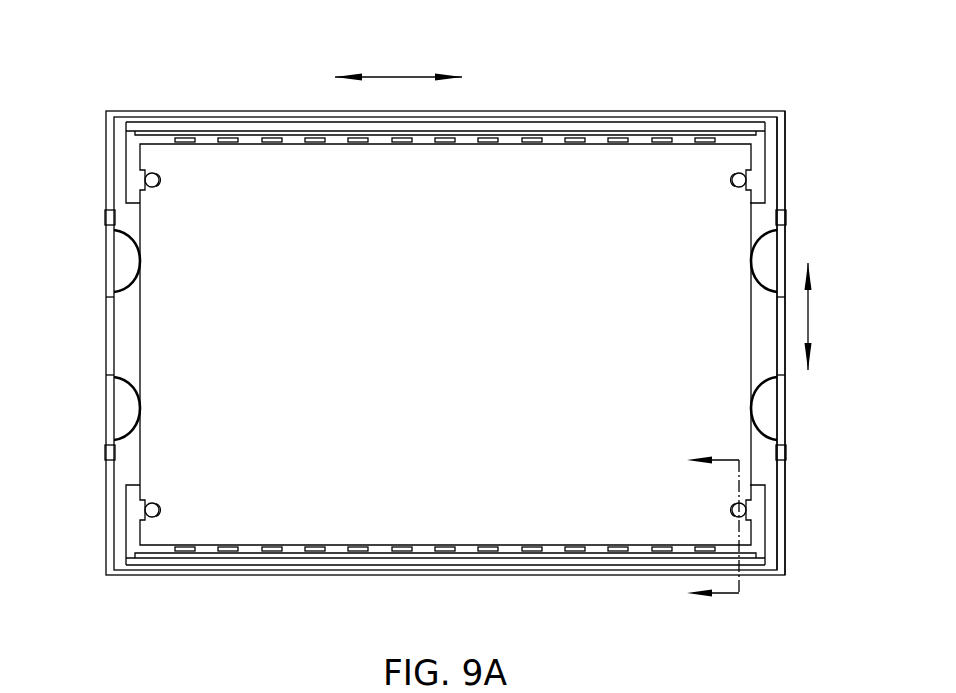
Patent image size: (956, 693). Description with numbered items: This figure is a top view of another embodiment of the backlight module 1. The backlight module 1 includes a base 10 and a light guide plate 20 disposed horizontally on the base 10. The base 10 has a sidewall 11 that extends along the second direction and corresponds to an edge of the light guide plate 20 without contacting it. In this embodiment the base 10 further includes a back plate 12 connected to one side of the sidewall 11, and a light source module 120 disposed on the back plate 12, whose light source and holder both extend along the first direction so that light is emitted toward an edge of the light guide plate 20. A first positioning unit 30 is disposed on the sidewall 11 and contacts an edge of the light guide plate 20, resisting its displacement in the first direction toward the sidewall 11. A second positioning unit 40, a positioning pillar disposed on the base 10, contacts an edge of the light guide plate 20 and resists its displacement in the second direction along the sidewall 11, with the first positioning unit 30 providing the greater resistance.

The backlight module 1 is at (144, 49).
The base 10 is at (112, 100).
The sidewall 11 is at (780, 160).
The back plate 12 is at (630, 120).
The light source module 120 is at (126, 152).
The light guide plate 20 is at (158, 472).
The first positioning unit 30 is at (110, 327).
The second positioning unit 40 is at (147, 179).